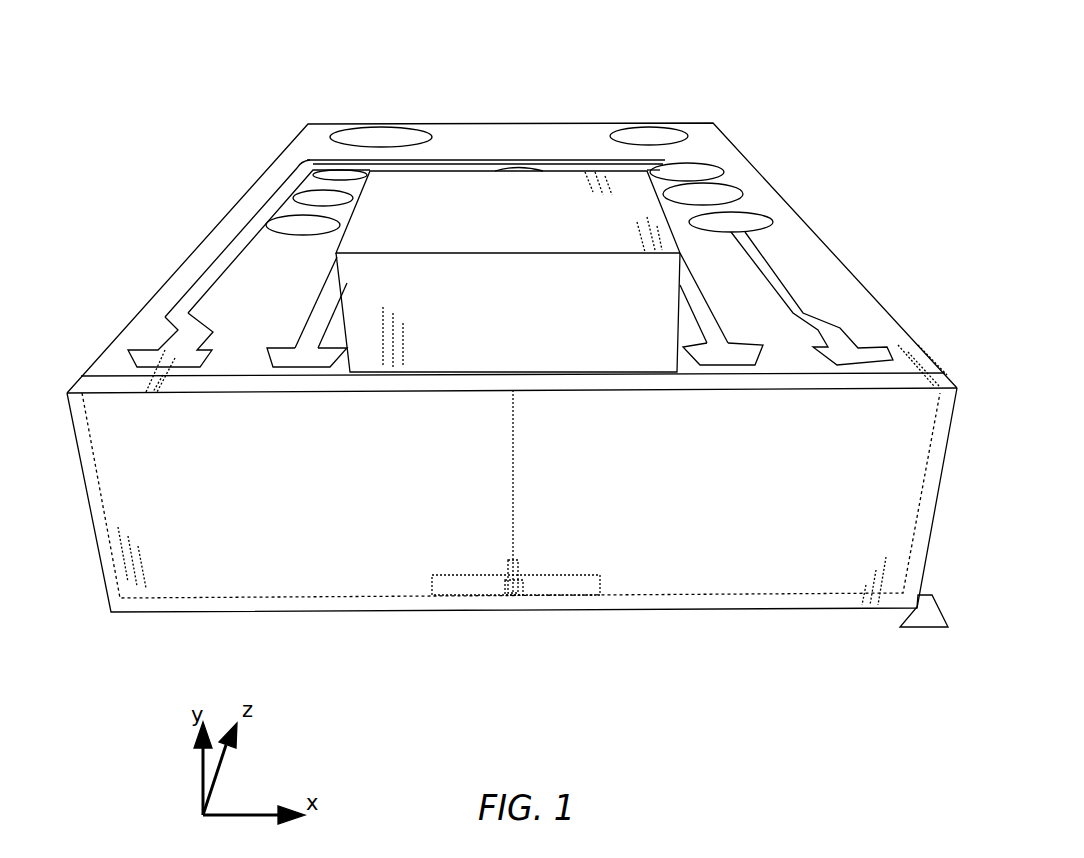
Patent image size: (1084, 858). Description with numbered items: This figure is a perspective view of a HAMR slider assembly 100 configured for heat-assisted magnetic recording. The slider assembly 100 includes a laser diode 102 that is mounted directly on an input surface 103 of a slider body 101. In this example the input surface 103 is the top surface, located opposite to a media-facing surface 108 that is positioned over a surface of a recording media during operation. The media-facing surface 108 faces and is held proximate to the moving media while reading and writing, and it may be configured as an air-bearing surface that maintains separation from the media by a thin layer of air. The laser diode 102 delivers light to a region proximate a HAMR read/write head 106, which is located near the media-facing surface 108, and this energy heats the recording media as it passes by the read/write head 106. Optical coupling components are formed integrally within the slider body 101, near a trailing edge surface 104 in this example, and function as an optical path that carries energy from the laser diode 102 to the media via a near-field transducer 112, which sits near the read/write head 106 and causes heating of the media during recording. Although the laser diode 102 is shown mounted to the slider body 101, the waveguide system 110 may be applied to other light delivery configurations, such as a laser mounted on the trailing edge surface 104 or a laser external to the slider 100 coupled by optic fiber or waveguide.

The HAMR slider assembly 100 is at (728, 58).
The slider body 101 is at (278, 160).
The laser diode 102 is at (463, 177).
The input surface 103 is at (142, 328).
The trailing edge surface 104 is at (182, 582).
The read/write head 106 is at (515, 597).
The media-facing surface 108 is at (934, 627).
The waveguide system 110 is at (513, 477).
The near-field transducer 112 is at (512, 597).